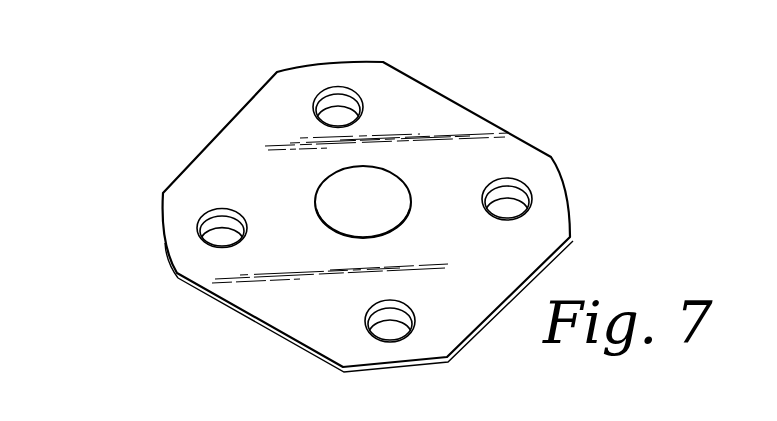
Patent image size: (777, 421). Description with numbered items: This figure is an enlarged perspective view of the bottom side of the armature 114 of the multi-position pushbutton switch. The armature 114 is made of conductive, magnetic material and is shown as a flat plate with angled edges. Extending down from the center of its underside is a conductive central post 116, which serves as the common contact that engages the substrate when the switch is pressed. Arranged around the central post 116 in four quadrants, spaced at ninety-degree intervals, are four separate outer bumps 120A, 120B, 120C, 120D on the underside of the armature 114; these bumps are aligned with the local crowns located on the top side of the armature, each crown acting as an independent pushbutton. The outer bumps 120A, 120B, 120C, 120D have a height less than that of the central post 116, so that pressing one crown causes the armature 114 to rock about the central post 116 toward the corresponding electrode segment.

The armature 114 is at (470, 108).
The central post 116 is at (316, 217).
The outer bump 120A is at (357, 93).
The outer bump 120B is at (530, 187).
The outer bump 120C is at (383, 330).
The outer bump 120D is at (200, 232).